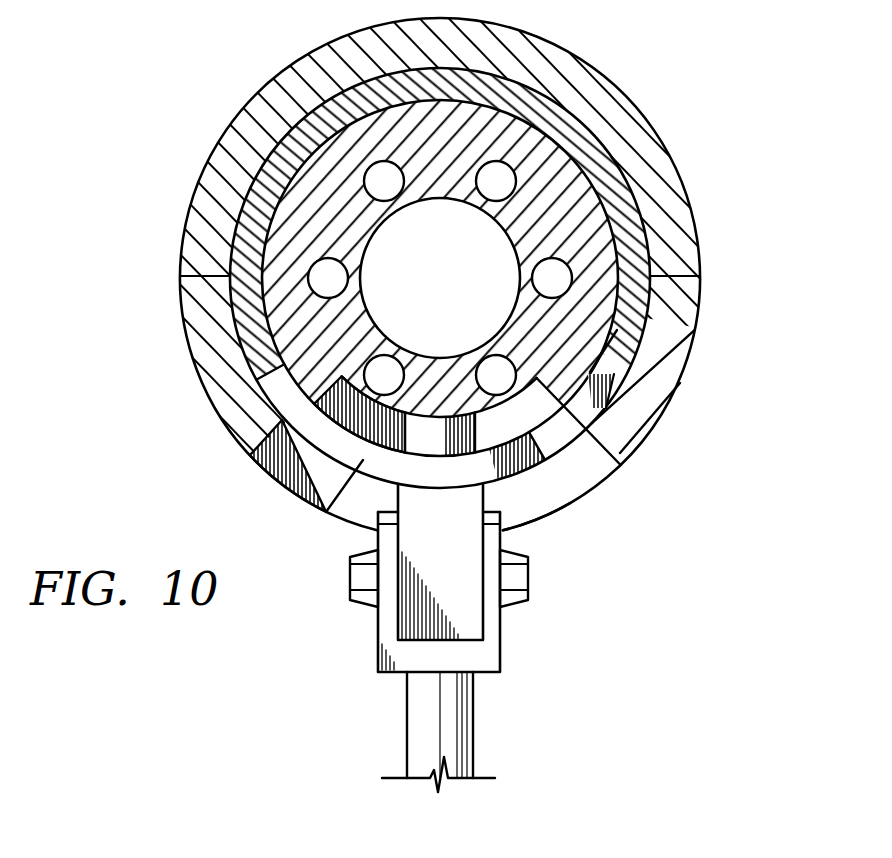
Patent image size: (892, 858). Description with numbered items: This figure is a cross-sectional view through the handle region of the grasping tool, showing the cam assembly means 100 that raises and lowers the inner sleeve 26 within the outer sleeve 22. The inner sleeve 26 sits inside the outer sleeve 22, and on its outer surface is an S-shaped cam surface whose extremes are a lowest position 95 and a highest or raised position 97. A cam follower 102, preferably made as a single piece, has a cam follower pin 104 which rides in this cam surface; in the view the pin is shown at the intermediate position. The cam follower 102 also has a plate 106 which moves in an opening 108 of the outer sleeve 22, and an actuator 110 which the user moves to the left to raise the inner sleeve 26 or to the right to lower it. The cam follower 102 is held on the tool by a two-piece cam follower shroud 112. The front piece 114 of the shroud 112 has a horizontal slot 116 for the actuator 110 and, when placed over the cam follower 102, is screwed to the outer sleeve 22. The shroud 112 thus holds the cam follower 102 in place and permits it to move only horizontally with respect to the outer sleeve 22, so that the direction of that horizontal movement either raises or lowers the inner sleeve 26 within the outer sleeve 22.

The cam follower shroud 112 is at (600, 104).
The outer sleeve 22 is at (632, 245).
The inner sleeve 26 is at (581, 214).
The front piece 114 is at (666, 360).
The cam follower pin 104 is at (443, 428).
The lowest position 95 is at (278, 478).
The plate 106 is at (327, 512).
The highest or raised position 97 is at (550, 404).
The opening 108 is at (553, 444).
The horizontal slot 116 is at (540, 494).
The cam follower 102 is at (450, 570).
The actuator 110 is at (428, 608).
The cam assembly means 100 is at (545, 545).